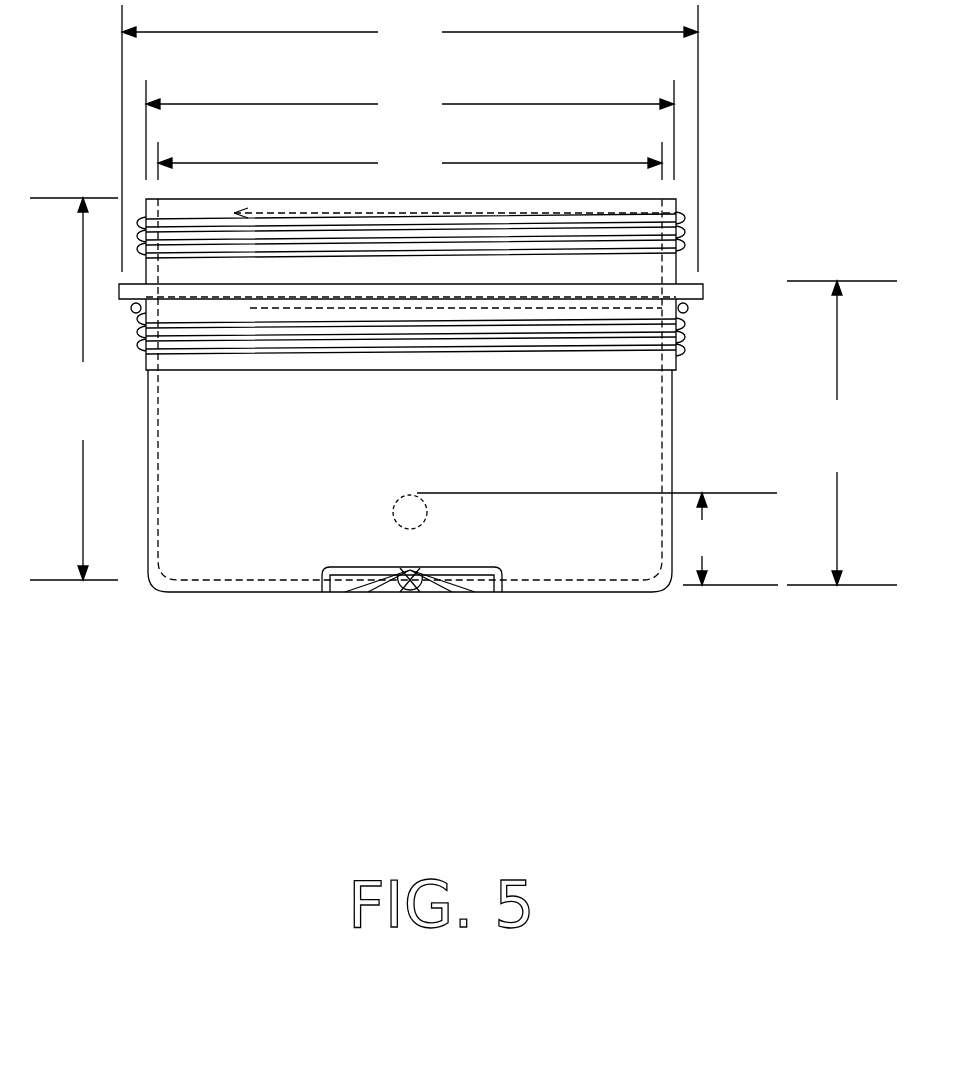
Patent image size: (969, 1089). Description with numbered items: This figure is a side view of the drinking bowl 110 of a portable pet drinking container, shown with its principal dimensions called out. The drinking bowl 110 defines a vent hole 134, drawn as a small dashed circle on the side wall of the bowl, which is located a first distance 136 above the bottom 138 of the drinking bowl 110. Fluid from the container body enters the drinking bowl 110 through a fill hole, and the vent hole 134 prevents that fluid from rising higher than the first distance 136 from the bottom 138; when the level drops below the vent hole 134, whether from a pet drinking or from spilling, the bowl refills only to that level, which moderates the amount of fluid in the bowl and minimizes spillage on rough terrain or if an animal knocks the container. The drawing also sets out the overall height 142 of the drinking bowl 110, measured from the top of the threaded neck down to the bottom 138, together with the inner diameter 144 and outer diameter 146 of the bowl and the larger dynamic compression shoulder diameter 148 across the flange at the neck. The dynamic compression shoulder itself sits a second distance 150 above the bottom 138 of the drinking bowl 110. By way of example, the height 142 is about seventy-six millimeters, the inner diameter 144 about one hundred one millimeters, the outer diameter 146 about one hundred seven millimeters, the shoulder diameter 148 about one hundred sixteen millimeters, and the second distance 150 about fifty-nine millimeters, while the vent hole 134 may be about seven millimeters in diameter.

The drinking bowl 110 is at (168, 594).
The vent hole 134 is at (403, 510).
The first distance 136 is at (729, 539).
The bottom 138 is at (560, 578).
The height 142 is at (74, 389).
The inner diameter 144 is at (410, 161).
The outer diameter 146 is at (410, 130).
The dynamic compression shoulder diameter 148 is at (410, 138).
The second distance 150 is at (842, 433).